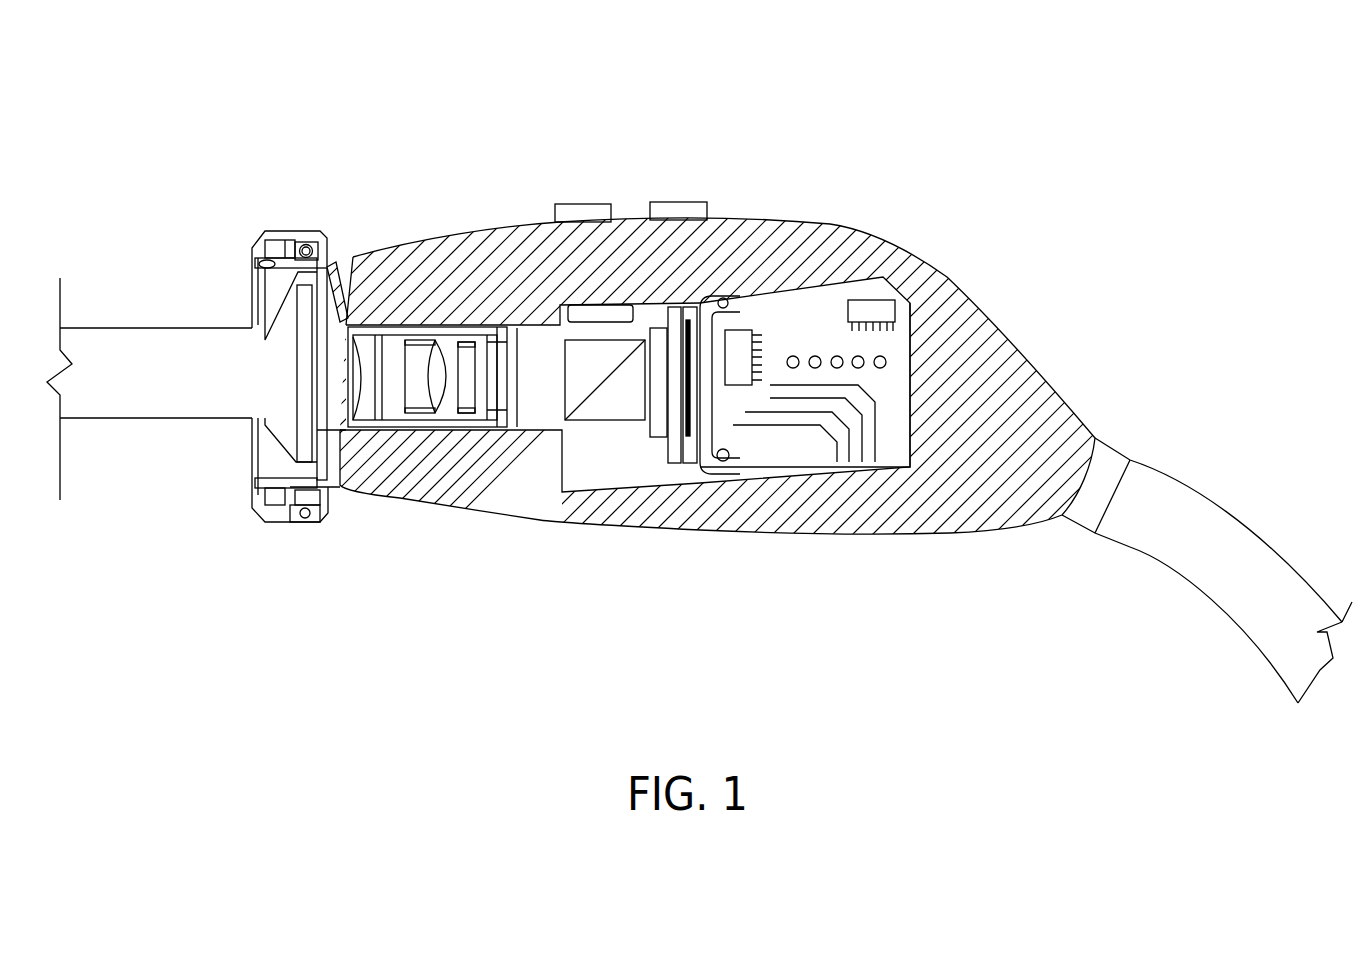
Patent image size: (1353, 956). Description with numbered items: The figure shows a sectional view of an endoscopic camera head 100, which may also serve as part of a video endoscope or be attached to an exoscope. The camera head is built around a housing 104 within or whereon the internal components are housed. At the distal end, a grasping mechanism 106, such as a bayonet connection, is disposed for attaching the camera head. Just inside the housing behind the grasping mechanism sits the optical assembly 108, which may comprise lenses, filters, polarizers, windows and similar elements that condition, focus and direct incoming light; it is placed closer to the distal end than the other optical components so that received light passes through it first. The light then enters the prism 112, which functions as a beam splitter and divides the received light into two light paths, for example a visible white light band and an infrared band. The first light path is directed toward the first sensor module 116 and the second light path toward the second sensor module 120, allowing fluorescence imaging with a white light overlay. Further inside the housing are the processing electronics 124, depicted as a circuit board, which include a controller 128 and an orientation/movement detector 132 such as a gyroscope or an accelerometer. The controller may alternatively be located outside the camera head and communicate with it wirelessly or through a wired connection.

The endoscopic camera head 100 is at (1124, 110).
The housing 104 is at (781, 232).
The grasping mechanism 106 is at (292, 522).
The optical assembly 108 is at (437, 352).
The prism 112 is at (585, 382).
The first sensor module 116 is at (661, 403).
The second sensor module 120 is at (601, 310).
The processing electronics 124 is at (886, 379).
The controller 128 is at (740, 368).
The orientation/movement detector 132 is at (883, 310).